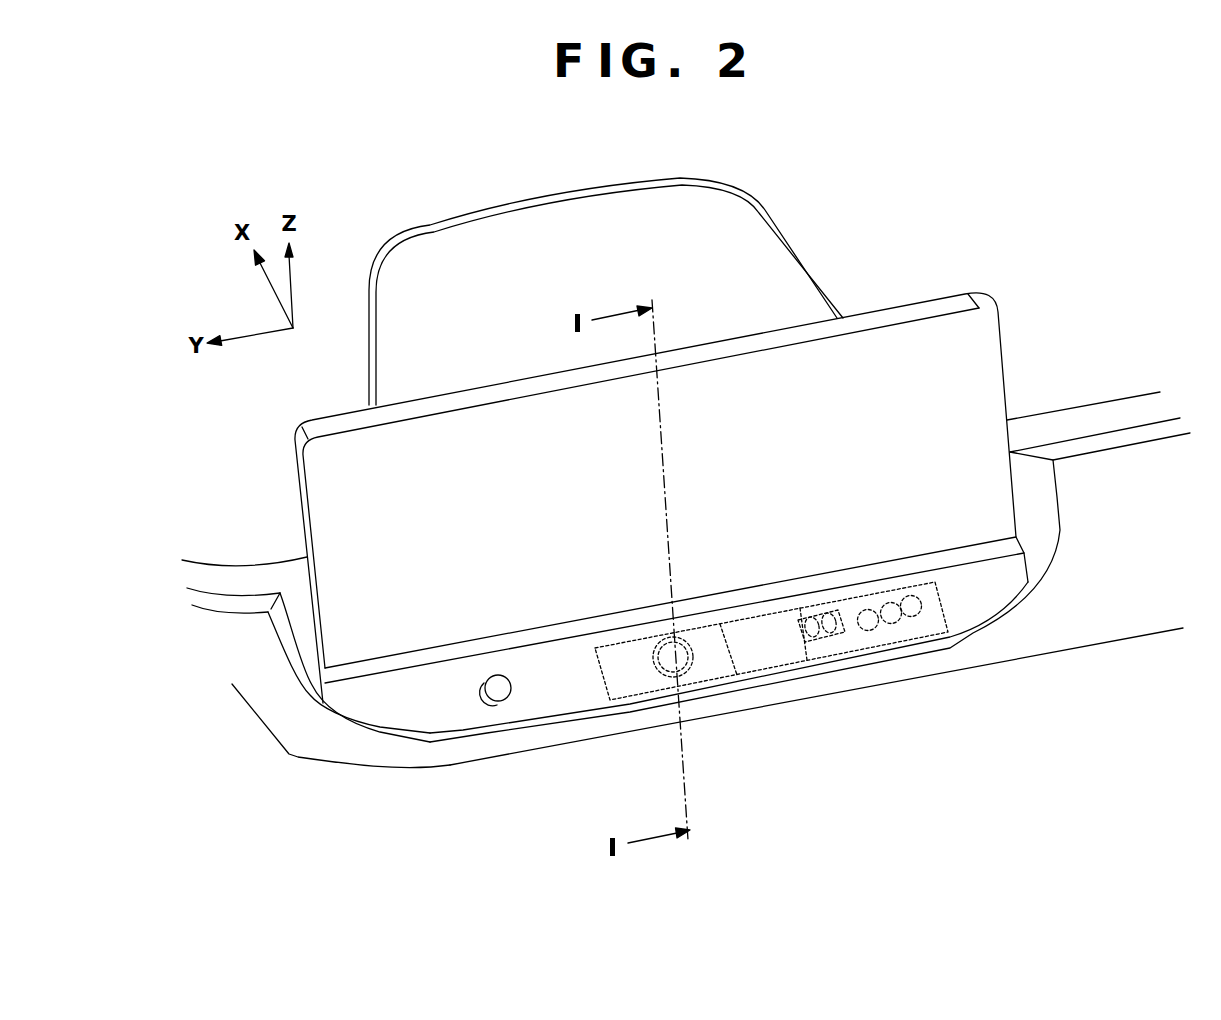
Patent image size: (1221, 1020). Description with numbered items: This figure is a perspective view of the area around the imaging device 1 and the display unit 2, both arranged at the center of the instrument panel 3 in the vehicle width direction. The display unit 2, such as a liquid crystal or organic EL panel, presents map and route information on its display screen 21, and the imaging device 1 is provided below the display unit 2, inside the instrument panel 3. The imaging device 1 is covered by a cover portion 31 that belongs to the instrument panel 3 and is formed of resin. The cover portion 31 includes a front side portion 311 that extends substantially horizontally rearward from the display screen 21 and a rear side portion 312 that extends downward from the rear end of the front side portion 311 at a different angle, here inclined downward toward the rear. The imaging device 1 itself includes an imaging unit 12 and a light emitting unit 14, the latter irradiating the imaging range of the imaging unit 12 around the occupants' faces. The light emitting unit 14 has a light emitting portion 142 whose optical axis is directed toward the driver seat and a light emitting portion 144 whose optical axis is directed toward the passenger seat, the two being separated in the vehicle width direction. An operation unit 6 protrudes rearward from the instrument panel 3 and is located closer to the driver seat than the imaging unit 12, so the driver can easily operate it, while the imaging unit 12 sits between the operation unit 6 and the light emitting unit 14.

The imaging device 1 is at (790, 733).
The display unit 2 is at (942, 292).
The display screen 21 is at (990, 337).
The instrument panel 3 is at (1127, 448).
The cover portion 31 is at (367, 742).
The front side portion 311 is at (350, 688).
The rear side portion 312 is at (405, 740).
The operation unit 6 is at (496, 702).
The imaging unit 12 is at (676, 680).
The light emitting unit 14 is at (862, 713).
The light emitting portion 142 is at (876, 596).
The light emitting portion 144 is at (816, 606).